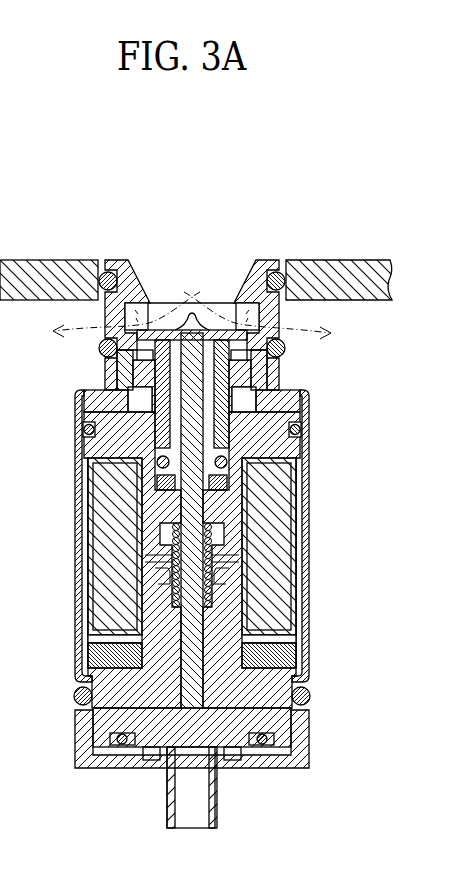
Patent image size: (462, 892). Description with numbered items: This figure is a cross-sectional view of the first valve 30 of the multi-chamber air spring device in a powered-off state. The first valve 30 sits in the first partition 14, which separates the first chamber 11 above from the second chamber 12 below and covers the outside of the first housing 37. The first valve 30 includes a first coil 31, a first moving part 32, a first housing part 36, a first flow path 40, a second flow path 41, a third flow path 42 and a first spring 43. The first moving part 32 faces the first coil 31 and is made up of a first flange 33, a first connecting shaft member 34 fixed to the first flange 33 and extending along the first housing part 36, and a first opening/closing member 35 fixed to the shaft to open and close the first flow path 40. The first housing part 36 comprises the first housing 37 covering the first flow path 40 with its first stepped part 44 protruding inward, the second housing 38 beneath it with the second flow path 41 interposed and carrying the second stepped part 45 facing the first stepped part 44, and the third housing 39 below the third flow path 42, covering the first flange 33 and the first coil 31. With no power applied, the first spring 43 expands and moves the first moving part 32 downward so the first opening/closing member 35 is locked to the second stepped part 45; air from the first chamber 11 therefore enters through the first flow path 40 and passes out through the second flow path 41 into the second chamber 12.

The first chamber 11 is at (43, 219).
The second chamber 12 is at (41, 441).
The first partition 14 is at (350, 272).
The first valve 30 is at (63, 352).
The first coil 31 is at (283, 581).
The first moving part 32 is at (218, 318).
The first flange 33 is at (224, 625).
The first connecting shaft member 34 is at (190, 468).
The first opening/closing member 35 is at (153, 328).
The first housing part 36 is at (344, 390).
The first housing 37 is at (252, 285).
The second housing 38 is at (286, 349).
The third housing 39 is at (300, 413).
The first flow path 40 is at (151, 276).
The second flow path 41 is at (124, 318).
The third flow path 42 is at (130, 366).
The first spring 43 is at (208, 537).
The first stepped part 44 is at (241, 306).
The second stepped part 45 is at (262, 371).